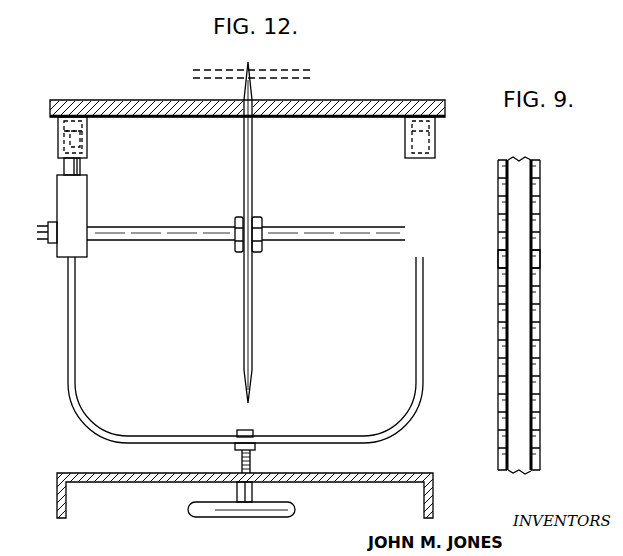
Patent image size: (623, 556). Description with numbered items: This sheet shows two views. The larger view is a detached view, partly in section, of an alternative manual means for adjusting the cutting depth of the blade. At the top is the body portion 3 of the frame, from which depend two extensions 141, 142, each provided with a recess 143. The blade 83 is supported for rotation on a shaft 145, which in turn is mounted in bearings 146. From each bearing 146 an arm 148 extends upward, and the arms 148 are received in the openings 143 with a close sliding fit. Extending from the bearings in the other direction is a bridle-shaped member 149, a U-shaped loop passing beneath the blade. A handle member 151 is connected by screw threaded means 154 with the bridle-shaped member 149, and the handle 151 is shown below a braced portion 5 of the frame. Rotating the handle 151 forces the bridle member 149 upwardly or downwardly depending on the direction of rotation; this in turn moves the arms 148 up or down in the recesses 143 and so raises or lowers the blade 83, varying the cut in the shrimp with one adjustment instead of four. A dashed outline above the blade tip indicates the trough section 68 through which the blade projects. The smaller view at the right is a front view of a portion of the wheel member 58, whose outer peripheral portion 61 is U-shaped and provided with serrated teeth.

In FIG. 12, the body portion 3 is at (345, 100).
In FIG. 12, the brace 5 is at (378, 483).
In FIG. 9, the wheel member 58 is at (520, 318).
In FIG. 9, the outer peripheral portion 61 is at (505, 272).
In FIG. 12, the trough section 68 is at (200, 70).
In FIG. 12, the blade 83 is at (250, 207).
In FIG. 12, the extension 141 is at (88, 137).
In FIG. 12, the extension 142 is at (436, 137).
In FIG. 12, the recess 143 is at (60, 137).
In FIG. 12, the shaft 145 is at (348, 237).
In FIG. 12, the bearing 146 is at (75, 219).
In FIG. 12, the arm 148 is at (80, 166).
In FIG. 12, the bridle-shaped member 149 is at (417, 376).
In FIG. 12, the handle member 151 is at (192, 516).
In FIG. 12, the screw threaded means 154 is at (240, 458).